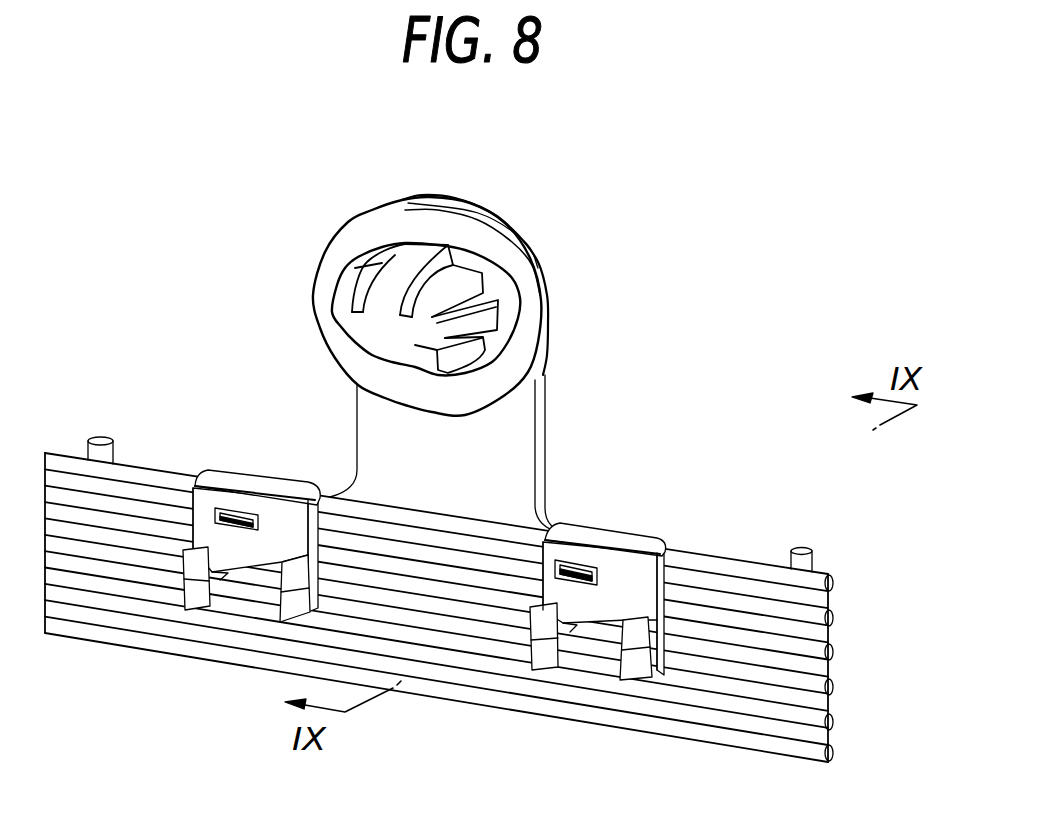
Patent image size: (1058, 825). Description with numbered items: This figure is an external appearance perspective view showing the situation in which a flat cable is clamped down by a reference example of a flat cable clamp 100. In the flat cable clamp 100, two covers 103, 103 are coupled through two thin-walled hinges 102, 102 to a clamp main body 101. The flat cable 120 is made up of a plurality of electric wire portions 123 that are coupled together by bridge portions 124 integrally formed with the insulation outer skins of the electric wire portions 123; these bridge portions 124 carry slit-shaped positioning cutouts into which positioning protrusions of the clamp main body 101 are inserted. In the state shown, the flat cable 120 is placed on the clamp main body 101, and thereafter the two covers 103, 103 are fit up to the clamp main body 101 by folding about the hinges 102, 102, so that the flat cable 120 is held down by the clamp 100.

The flat cable clamp 100 is at (718, 324).
The clamp main body 101 is at (752, 564).
The thin-walled hinge 102 is at (252, 476).
The cover 103 is at (192, 518).
The flat cable 120 is at (828, 571).
The electric wire portion 123 is at (812, 616).
The bridge portion 124 is at (812, 634).